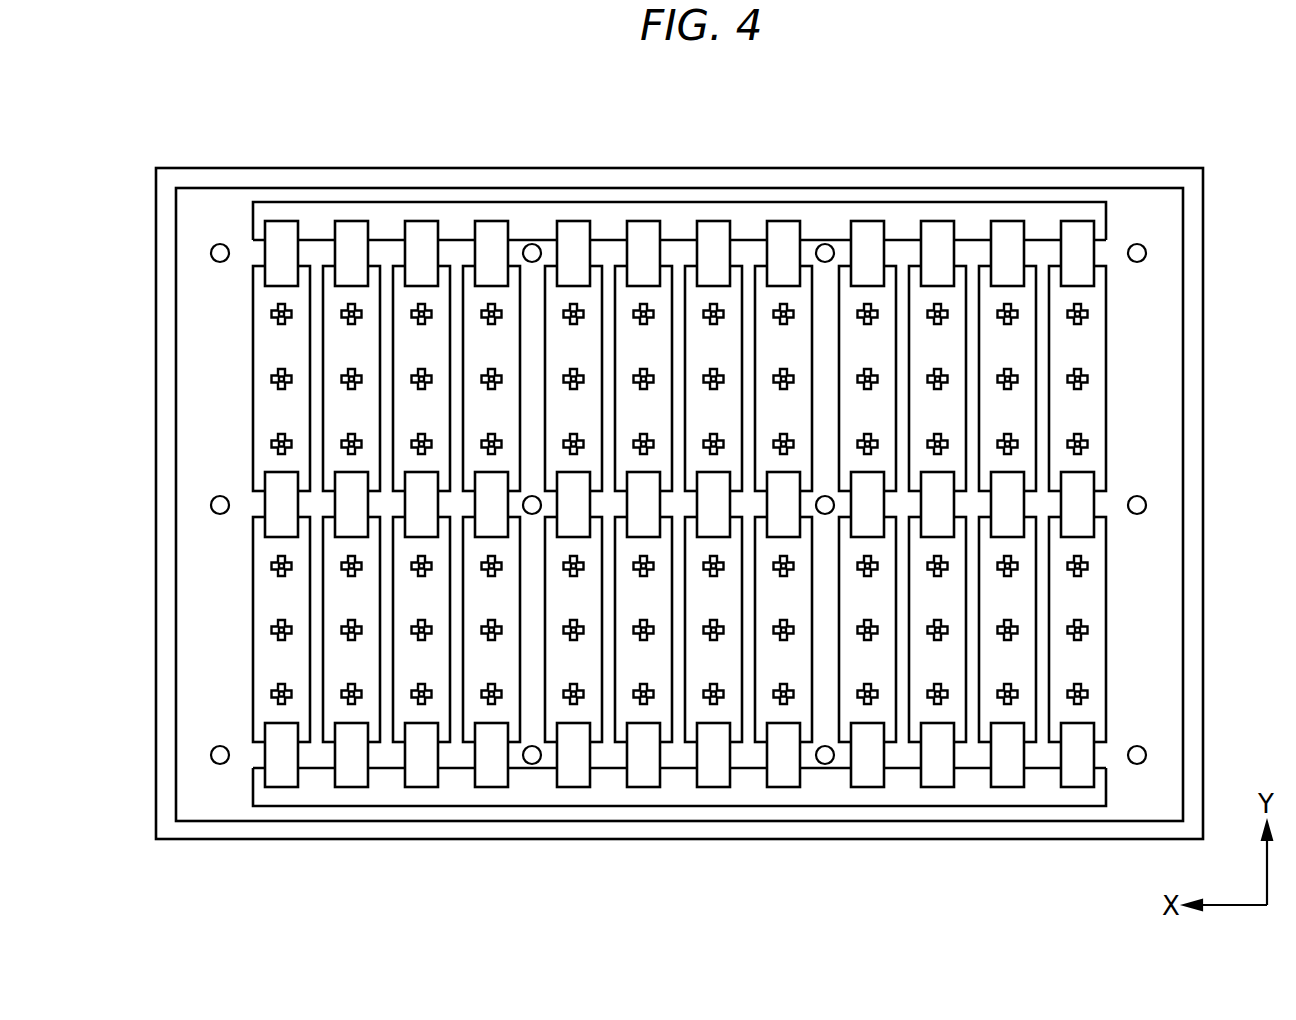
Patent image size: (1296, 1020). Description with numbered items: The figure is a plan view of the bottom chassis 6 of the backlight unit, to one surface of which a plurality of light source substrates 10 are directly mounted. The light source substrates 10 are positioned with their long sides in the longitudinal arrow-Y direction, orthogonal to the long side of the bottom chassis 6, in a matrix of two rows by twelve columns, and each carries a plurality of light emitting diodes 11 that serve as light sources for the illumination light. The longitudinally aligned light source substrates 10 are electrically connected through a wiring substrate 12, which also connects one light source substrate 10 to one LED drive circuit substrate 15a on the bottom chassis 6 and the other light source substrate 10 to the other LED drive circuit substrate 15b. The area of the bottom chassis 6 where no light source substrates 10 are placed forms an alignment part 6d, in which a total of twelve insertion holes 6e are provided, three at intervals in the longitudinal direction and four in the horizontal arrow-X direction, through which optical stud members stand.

The bottom chassis 6 is at (156, 705).
The alignment part 6d is at (210, 612).
The insertion holes 6e is at (532, 496).
The light source substrates 10 is at (1085, 415).
The light emitting diodes 11 is at (1087, 314).
The wiring substrate 12 is at (1073, 237).
The LED drive circuit substrate 15a is at (657, 212).
The LED drive circuit substrate 15b is at (668, 797).